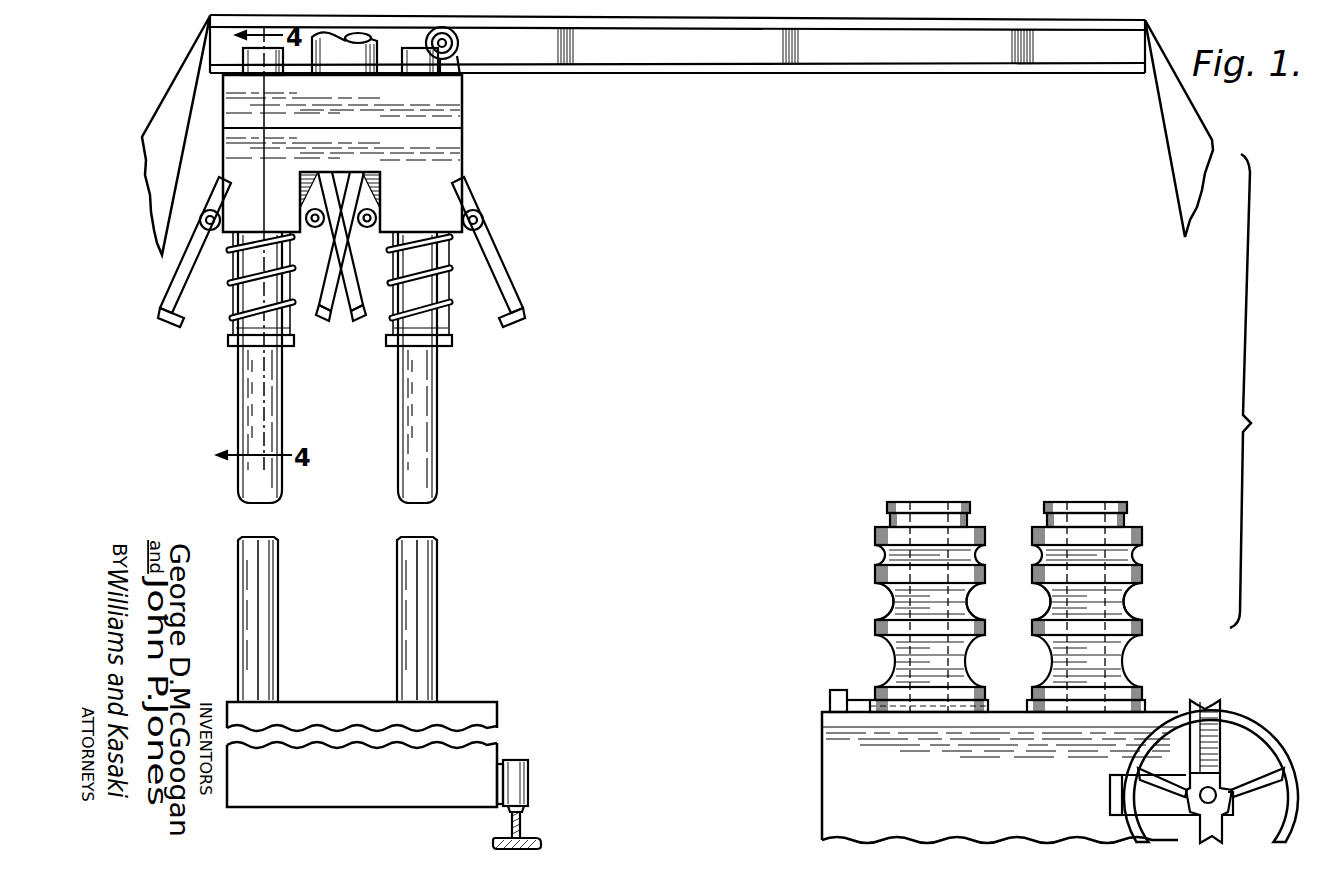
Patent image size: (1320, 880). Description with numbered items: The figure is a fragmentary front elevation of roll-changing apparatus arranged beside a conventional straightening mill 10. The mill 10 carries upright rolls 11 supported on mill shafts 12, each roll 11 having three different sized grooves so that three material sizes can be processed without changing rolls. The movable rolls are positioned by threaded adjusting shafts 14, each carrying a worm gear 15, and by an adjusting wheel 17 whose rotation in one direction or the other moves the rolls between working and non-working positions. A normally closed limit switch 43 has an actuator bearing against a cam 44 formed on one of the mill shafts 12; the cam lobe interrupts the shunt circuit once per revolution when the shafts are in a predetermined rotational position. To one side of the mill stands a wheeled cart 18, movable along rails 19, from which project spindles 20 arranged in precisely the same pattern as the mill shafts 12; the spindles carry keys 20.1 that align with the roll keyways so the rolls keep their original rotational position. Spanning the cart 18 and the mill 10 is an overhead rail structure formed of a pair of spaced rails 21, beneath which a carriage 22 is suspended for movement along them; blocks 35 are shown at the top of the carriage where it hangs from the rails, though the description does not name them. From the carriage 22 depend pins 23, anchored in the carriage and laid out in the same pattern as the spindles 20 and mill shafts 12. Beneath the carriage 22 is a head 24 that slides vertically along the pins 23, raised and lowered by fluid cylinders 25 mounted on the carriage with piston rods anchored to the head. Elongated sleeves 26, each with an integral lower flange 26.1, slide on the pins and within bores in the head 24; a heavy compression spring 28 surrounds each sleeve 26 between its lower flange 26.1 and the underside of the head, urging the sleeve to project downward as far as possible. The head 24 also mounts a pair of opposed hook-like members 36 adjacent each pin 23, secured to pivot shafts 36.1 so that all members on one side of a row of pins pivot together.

The mill 10 is at (952, 804).
The upright rolls 11 is at (862, 634).
The mill shafts 12 is at (892, 604).
The threaded adjusting shafts 14 is at (1190, 742).
The worm gear 15 is at (1212, 702).
The adjusting wheel 17 is at (1125, 795).
The wheeled cart 18 is at (452, 704).
The rails 19 is at (523, 820).
The spindles 20 is at (270, 598).
The keys 20.1 is at (415, 637).
The rails 21 is at (934, 66).
The carriage 22 is at (462, 106).
The pins 23 is at (405, 419).
The head 24 is at (462, 156).
The fluid cylinders 25 is at (348, 58).
The elongated sleeves 26 is at (240, 326).
The lower flange 26.1 is at (236, 342).
The compression spring 28 is at (240, 284).
The block 35 is at (240, 55).
The hook-like members 36 is at (168, 315).
The pivot shafts 36.1 is at (200, 224).
The limit switch 43 is at (829, 702).
The cam 44 is at (913, 712).